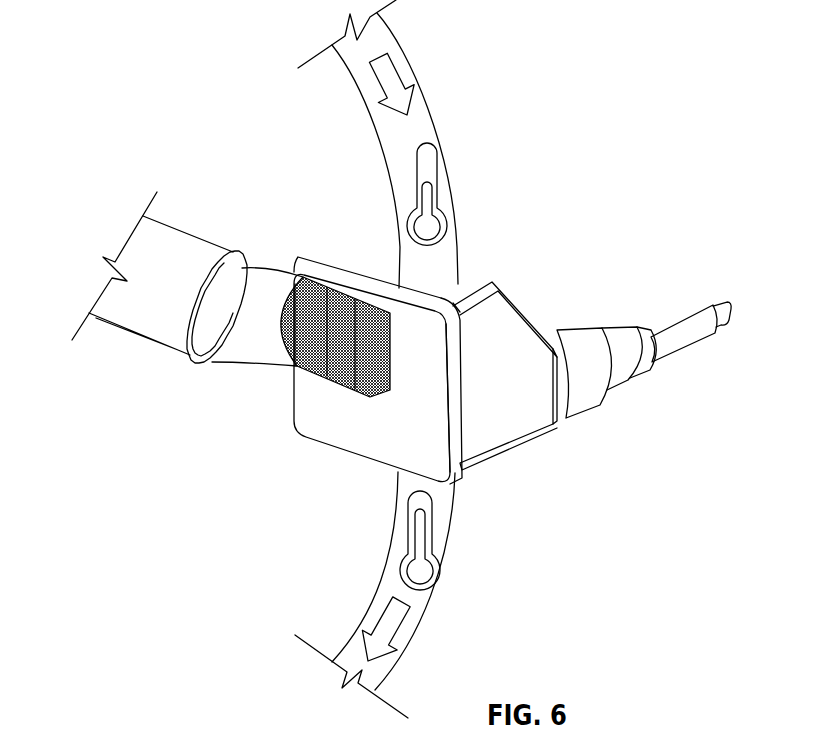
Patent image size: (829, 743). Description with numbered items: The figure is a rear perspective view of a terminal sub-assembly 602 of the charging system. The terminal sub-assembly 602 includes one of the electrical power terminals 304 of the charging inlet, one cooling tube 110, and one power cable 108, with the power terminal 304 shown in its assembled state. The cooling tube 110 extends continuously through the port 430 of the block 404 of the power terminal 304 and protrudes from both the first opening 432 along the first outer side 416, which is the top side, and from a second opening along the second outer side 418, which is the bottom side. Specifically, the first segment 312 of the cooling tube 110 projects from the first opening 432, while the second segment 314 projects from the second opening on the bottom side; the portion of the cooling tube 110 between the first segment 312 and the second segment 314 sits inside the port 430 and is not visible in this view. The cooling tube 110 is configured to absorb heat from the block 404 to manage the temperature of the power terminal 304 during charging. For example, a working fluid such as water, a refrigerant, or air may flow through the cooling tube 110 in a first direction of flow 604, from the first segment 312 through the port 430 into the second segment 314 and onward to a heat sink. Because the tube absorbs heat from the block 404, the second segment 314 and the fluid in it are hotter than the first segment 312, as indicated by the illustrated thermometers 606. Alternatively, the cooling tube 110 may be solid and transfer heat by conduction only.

The terminal sub-assembly 602 is at (200, 118).
The first direction of flow 604 is at (387, 80).
The cooling tube 110 is at (410, 359).
The first segment 312 is at (381, 127).
The second segment 314 is at (387, 566).
The thermometers 606 is at (428, 165).
The power cable 108 is at (175, 250).
The port 430 is at (414, 283).
The first opening 432 is at (460, 280).
The first outer side 416 is at (478, 283).
The block 404 is at (512, 335).
The electrical power terminal 304 is at (537, 437).
The second outer side 418 is at (502, 453).